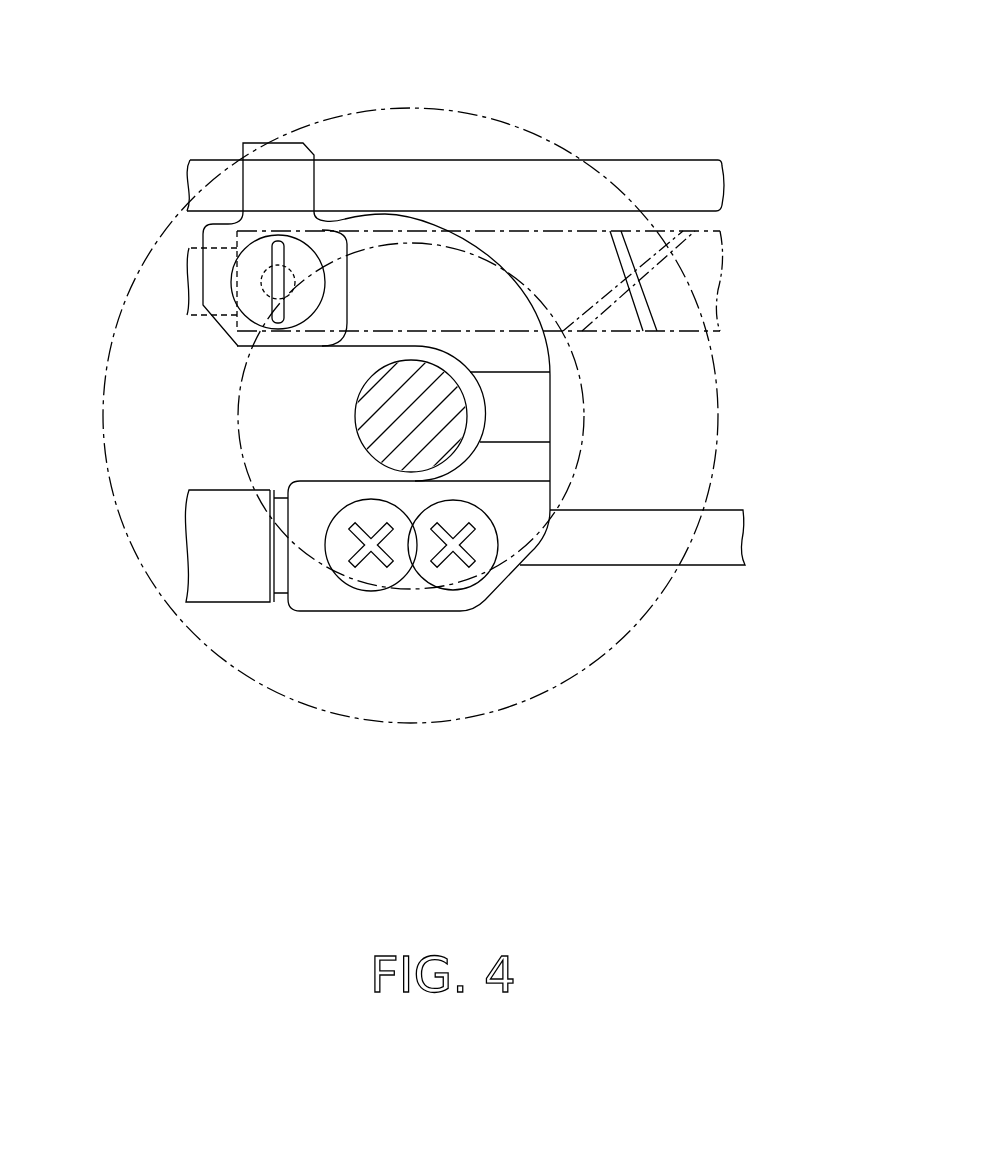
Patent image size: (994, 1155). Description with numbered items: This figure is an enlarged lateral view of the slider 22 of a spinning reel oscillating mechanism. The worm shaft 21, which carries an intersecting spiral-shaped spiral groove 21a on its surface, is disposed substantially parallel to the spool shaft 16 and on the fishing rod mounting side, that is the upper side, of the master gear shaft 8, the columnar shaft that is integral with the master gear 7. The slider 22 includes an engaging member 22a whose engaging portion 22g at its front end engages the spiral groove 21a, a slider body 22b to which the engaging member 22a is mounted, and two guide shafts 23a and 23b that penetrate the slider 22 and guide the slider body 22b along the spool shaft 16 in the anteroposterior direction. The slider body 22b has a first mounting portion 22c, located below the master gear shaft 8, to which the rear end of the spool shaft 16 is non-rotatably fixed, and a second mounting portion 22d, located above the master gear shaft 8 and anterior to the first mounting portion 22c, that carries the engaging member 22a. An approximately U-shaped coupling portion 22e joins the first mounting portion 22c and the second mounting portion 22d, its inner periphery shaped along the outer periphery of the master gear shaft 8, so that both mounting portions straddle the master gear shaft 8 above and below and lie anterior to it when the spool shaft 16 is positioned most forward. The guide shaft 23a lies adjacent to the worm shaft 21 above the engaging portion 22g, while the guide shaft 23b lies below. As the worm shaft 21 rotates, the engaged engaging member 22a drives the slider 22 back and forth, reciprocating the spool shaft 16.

The master gear 7 is at (514, 124).
The master gear shaft 8 is at (377, 420).
The spool shaft 16 is at (228, 598).
The worm shaft 21 is at (724, 241).
The spiral groove 21a is at (690, 226).
The slider 22 is at (560, 413).
The engaging member 22a is at (246, 276).
The slider body 22b is at (521, 578).
The first mounting portion 22c is at (322, 572).
The second mounting portion 22d is at (239, 241).
The coupling portion 22e is at (530, 430).
The engaging portion 22g is at (276, 254).
The guide shaft 23a is at (653, 172).
The guide shaft 23b is at (727, 510).